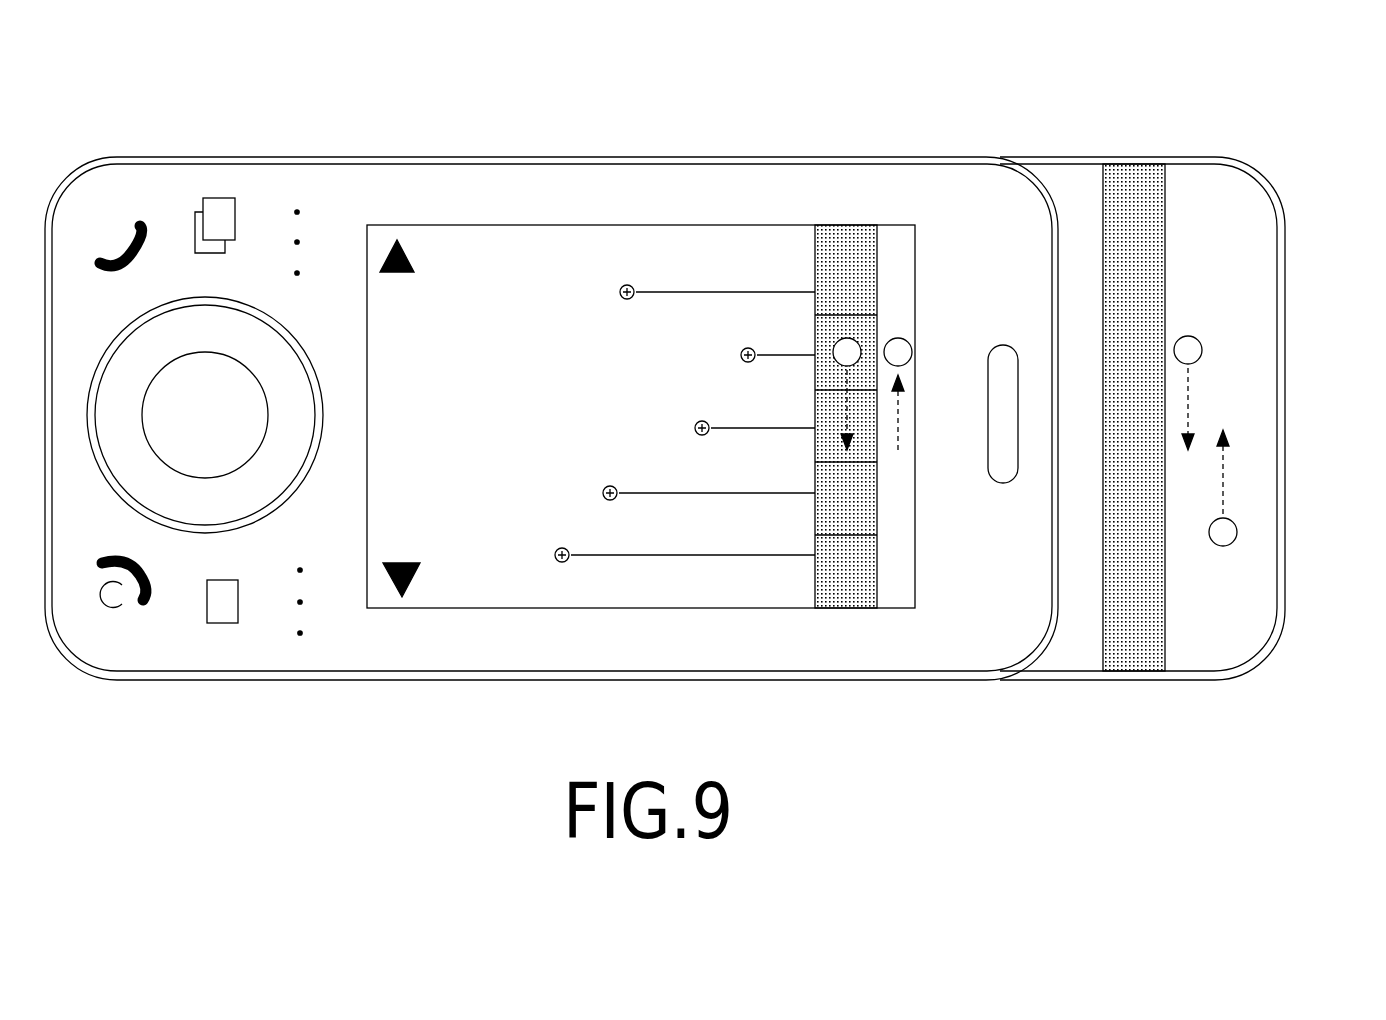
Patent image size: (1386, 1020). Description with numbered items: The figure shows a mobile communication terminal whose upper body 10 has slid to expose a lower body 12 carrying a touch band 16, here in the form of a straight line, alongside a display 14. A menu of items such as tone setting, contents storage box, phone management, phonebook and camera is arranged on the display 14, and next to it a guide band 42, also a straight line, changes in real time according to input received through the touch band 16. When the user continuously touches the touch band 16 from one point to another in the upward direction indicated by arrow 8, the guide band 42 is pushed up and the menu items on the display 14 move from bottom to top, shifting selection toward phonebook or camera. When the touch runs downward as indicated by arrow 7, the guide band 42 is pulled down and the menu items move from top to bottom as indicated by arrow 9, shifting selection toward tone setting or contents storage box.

The upper body 10 is at (336, 205).
The lower body 12 is at (1252, 463).
The display 14 is at (678, 250).
The touch band 16 is at (1160, 298).
The guide band 42 is at (863, 339).
The downward direction arrow 7 is at (1188, 393).
The upward direction arrow 8 is at (1223, 488).
The top-to-bottom menu movement arrow 9 is at (847, 394).